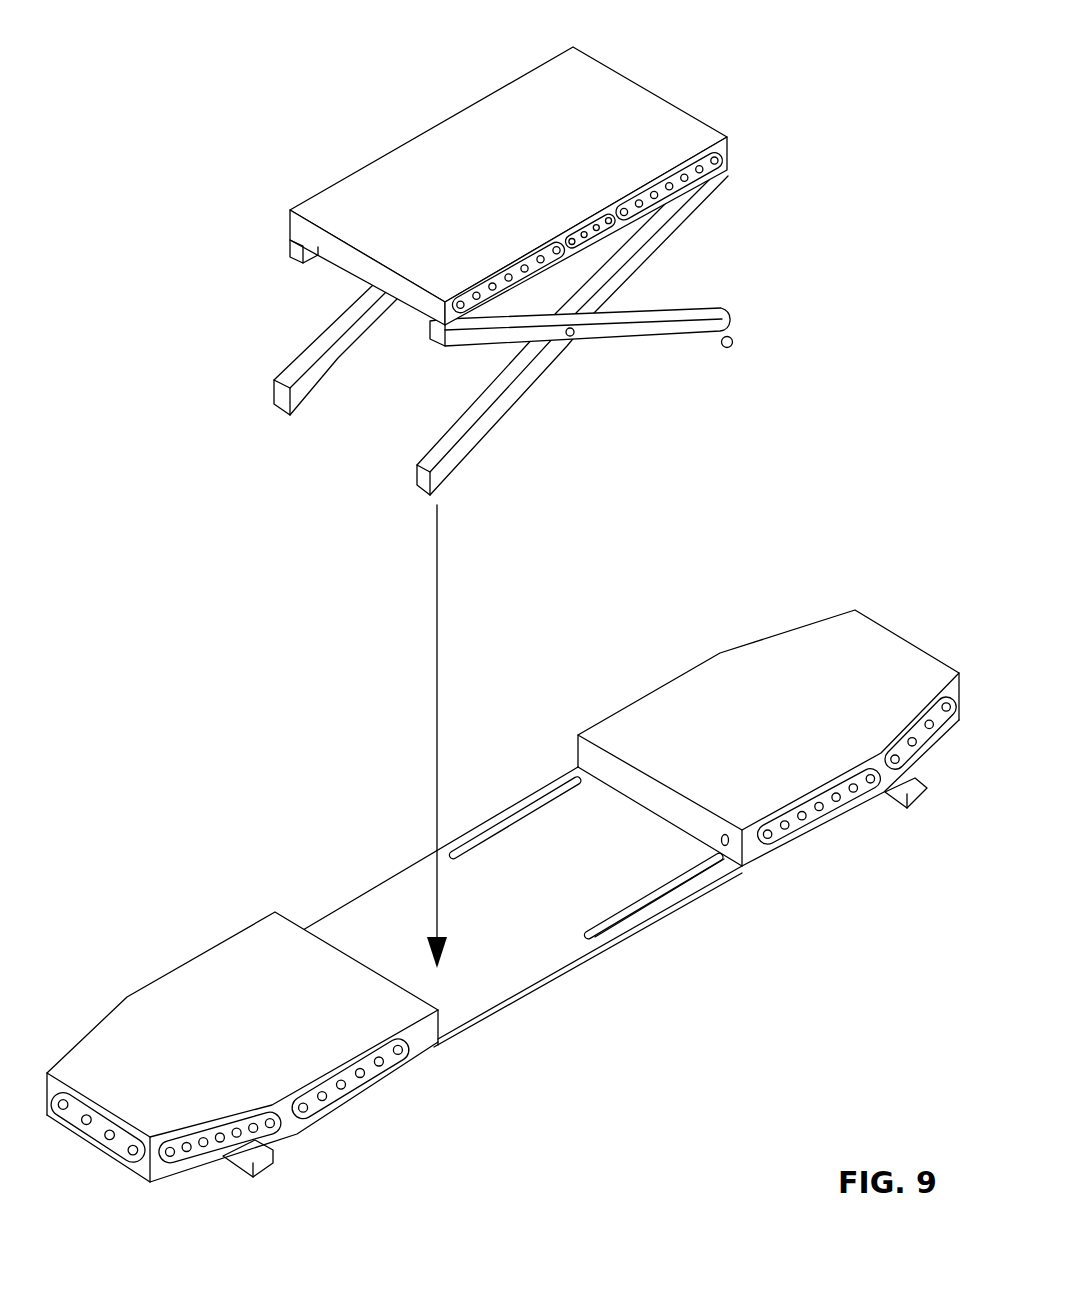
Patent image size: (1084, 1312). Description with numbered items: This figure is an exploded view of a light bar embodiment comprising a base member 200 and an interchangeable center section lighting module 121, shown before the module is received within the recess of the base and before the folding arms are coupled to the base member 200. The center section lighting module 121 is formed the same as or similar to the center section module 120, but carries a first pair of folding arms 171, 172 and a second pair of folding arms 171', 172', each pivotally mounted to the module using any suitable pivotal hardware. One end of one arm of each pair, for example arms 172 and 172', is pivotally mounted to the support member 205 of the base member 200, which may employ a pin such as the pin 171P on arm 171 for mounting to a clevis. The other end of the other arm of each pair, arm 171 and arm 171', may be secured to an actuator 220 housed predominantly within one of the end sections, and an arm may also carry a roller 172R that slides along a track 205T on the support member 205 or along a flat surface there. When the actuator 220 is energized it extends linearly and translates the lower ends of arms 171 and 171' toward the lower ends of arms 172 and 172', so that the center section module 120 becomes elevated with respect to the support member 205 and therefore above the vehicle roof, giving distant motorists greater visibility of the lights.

The center section module 120 is at (563, 88).
The center section lighting module 121 is at (355, 135).
The folding arm 171 is at (535, 356).
The folding arm 171' is at (286, 350).
The pin 171P is at (420, 495).
The folding arm 172 is at (636, 362).
The folding arm 172' is at (243, 239).
The roller 172R is at (733, 345).
The base member 200 is at (522, 1019).
The support member 205 is at (388, 907).
The track 205T is at (640, 903).
The actuator 220 is at (732, 845).